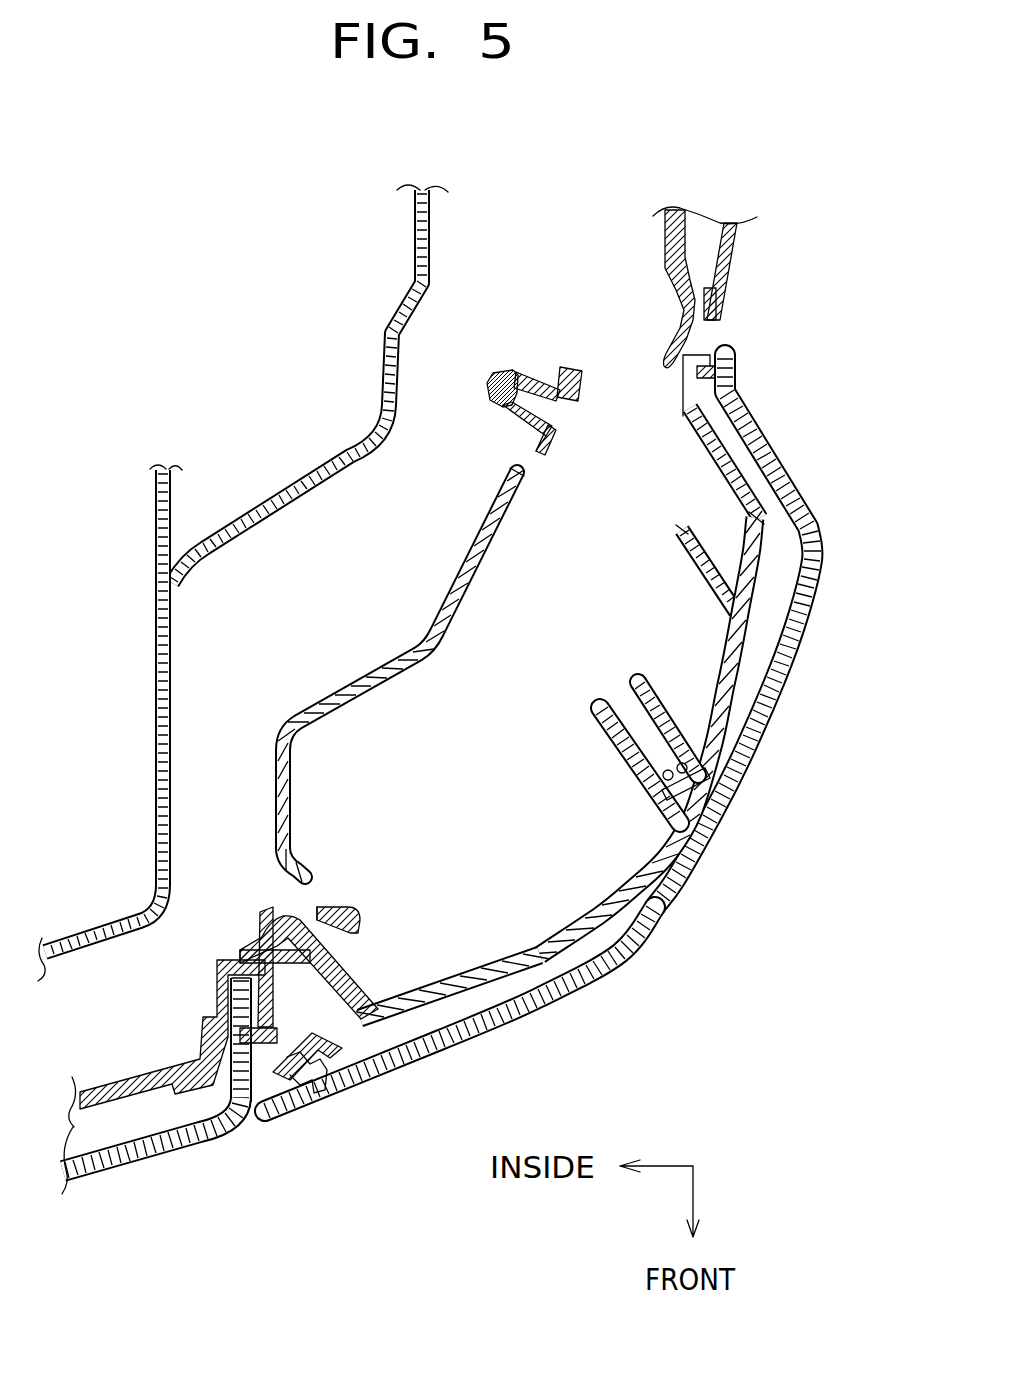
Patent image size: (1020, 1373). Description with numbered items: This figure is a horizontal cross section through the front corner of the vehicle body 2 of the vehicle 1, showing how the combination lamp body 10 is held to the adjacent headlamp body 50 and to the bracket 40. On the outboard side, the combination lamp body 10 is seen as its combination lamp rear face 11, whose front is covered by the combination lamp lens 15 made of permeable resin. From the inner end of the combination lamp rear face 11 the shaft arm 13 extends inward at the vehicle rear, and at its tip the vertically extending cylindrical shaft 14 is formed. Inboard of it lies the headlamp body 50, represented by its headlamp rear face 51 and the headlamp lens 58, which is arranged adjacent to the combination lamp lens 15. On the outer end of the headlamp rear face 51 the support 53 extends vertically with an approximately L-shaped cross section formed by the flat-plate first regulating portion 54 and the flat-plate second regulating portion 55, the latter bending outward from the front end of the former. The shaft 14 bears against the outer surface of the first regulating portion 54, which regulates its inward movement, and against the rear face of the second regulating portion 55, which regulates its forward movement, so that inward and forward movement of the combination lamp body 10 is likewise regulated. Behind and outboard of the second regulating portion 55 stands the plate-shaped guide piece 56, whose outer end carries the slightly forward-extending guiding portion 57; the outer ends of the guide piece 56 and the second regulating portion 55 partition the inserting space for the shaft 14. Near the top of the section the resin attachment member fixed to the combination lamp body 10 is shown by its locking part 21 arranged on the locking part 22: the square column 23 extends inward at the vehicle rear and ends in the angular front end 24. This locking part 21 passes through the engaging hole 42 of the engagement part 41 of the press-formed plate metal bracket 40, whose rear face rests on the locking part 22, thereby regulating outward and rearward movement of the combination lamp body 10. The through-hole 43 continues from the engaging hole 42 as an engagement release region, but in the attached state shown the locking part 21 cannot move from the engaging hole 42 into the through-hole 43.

The vehicle 1 is at (574, 671).
The vehicle body 2 is at (96, 962).
The combination lamp body 10 is at (624, 969).
The combination lamp rear face 11 is at (721, 675).
The shaft arm 13 is at (360, 973).
The shaft 14 is at (318, 930).
The combination lamp lens 15 is at (705, 886).
The locking part 21 is at (533, 423).
The locking part 22 is at (528, 444).
The square column 23 is at (513, 409).
The front end 24 is at (487, 378).
The bracket 40 is at (460, 572).
The engagement part 41 is at (573, 356).
The engaging hole 42 is at (543, 372).
The through-hole 43 is at (521, 468).
The headlamp body 50 is at (185, 1135).
The headlamp rear face 51 is at (140, 1077).
The support 53 is at (247, 1112).
The first regulating portion 54 is at (262, 943).
The second regulating portion 55 is at (383, 1077).
The guide piece 56 is at (333, 904).
The guiding portion 57 is at (365, 930).
The headlamp lens 58 is at (170, 1160).